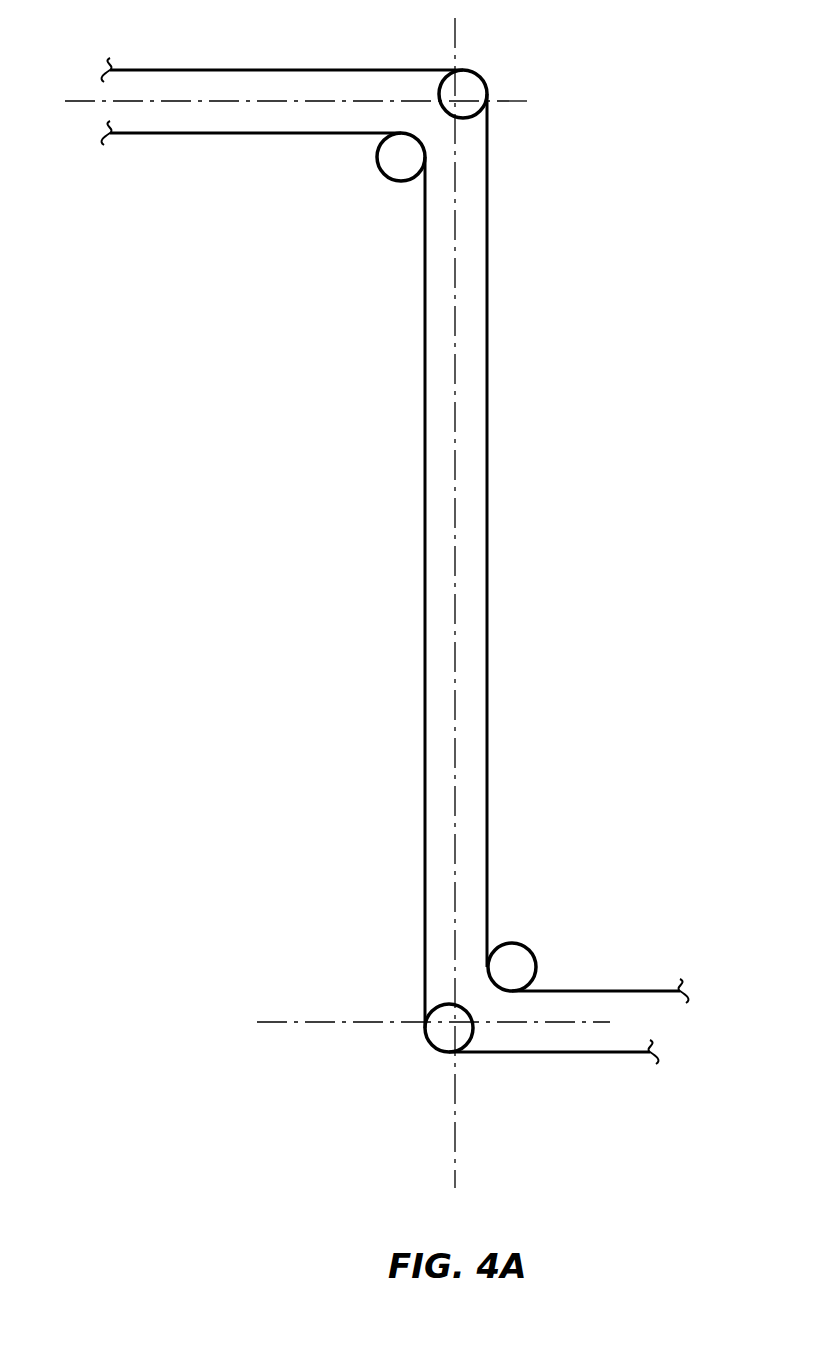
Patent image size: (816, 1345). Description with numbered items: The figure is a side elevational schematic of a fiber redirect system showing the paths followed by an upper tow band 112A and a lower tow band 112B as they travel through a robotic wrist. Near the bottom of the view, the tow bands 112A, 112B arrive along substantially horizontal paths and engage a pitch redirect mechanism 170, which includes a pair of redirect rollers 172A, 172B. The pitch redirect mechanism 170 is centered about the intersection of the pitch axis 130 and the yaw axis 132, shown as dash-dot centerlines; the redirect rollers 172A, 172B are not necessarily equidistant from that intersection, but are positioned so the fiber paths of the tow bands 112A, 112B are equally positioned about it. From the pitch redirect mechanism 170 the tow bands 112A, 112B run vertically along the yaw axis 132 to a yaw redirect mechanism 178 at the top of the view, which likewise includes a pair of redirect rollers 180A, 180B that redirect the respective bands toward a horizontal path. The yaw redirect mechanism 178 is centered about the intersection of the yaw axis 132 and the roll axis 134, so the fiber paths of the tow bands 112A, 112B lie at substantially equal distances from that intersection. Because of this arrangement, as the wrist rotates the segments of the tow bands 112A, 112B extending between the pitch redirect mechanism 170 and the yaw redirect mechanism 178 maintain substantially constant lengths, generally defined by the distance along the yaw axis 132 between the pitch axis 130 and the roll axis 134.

The roll axis 134 is at (263, 101).
The yaw axis 132 is at (455, 296).
The yaw redirect mechanism 178 is at (334, 212).
The redirect roller 180A is at (472, 113).
The redirect roller 180B is at (398, 181).
The pitch redirect mechanism 170 is at (354, 982).
The redirect roller 172A is at (528, 946).
The redirect roller 172B is at (471, 1047).
The pitch axis 130 is at (453, 1024).
The upper tow band 112A is at (632, 992).
The lower tow band 112B is at (608, 1057).